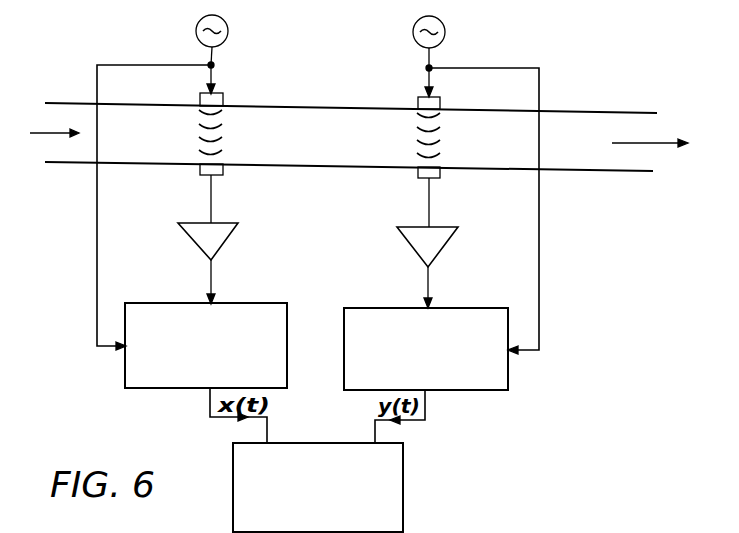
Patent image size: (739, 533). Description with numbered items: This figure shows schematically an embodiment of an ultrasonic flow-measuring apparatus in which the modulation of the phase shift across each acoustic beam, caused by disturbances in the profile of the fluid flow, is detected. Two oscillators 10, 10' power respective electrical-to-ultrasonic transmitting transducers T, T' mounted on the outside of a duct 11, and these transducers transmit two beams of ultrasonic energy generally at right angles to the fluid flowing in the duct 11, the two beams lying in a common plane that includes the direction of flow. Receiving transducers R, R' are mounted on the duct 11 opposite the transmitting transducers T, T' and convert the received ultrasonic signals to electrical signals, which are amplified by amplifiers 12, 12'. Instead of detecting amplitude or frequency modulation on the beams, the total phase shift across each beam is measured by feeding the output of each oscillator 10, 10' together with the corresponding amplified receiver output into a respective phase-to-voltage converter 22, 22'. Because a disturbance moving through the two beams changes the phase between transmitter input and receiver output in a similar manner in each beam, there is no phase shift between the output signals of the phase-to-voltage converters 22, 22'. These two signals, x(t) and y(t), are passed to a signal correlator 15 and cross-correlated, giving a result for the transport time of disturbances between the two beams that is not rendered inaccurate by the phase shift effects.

The oscillator 10 is at (230, 39).
The oscillator 10' is at (456, 42).
The duct 11 is at (603, 120).
The transmitting transducer T is at (225, 84).
The transmitting transducer T' is at (446, 93).
The receiving transducer R is at (225, 187).
The receiving transducer R' is at (444, 190).
The amplifier 12 is at (226, 244).
The amplifier 12' is at (451, 247).
The phase-to-voltage converter 22 is at (183, 345).
The phase-to-voltage converter 22' is at (455, 352).
The signal correlator 15 is at (392, 501).